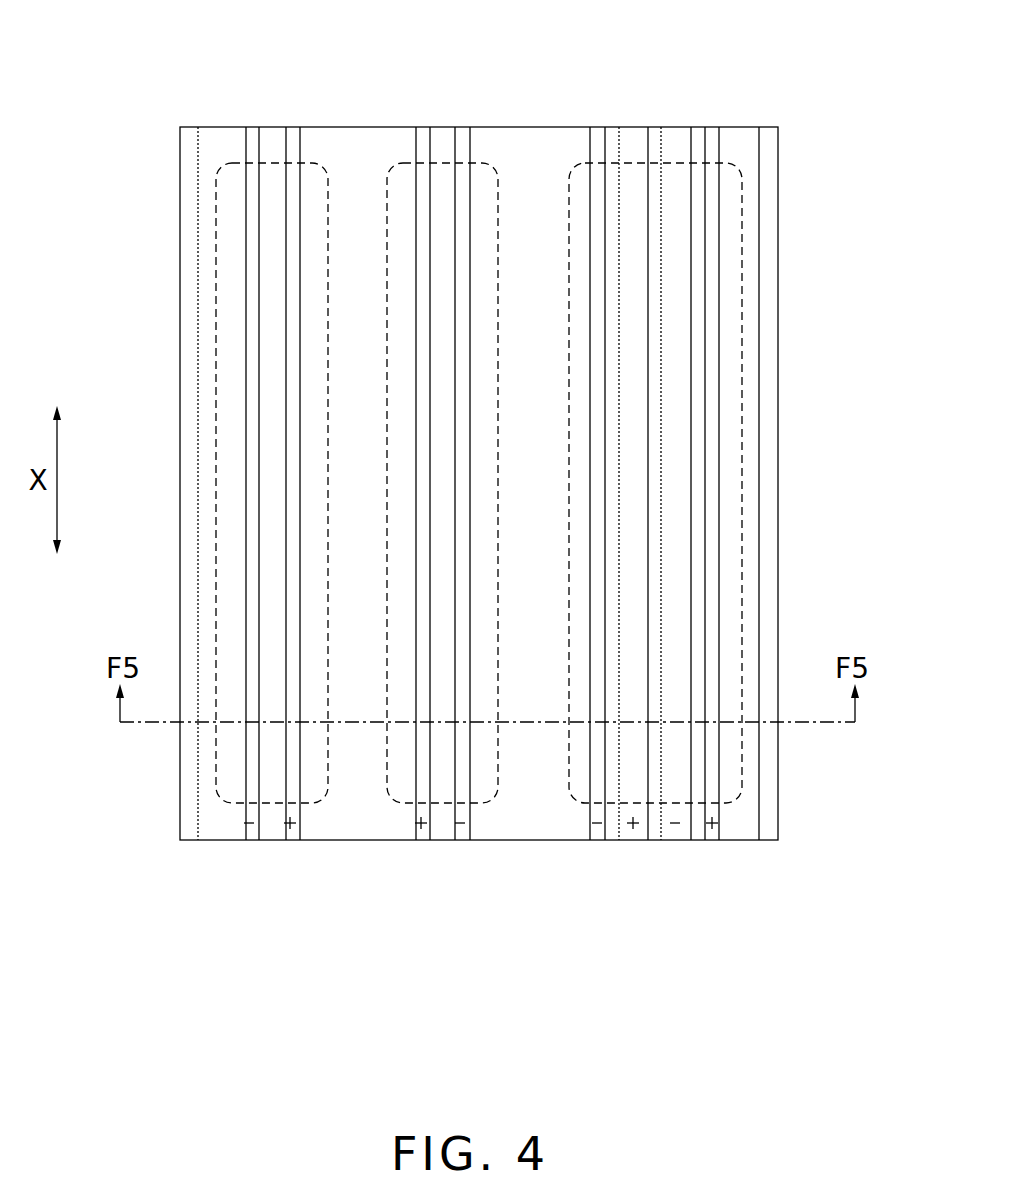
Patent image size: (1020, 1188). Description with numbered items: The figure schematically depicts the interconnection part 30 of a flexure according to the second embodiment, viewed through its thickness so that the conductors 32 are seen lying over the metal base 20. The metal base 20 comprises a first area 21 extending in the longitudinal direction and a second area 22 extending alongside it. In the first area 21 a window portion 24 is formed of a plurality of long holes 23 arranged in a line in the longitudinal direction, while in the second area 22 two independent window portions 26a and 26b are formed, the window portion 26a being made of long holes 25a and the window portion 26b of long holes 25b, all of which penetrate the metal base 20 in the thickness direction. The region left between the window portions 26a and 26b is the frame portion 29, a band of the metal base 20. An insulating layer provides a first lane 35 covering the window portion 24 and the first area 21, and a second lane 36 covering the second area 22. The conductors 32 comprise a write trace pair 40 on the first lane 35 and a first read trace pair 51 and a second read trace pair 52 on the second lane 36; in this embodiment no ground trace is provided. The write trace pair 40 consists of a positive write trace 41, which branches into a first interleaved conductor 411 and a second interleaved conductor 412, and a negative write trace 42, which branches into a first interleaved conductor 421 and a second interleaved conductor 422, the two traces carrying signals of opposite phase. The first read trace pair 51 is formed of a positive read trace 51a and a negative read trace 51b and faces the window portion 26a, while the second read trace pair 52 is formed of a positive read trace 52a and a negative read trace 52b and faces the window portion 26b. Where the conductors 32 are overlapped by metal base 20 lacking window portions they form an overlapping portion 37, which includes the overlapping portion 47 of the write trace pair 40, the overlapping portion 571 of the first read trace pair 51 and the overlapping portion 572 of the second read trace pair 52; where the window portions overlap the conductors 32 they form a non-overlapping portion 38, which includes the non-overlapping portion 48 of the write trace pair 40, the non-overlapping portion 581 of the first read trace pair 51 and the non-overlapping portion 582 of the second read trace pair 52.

The metal base 20 is at (774, 513).
The first area 21 is at (636, 245).
The second area 22 is at (270, 250).
The long hole 23 is at (742, 200).
The window portion 24 is at (656, 175).
The long hole 25a is at (498, 178).
The long hole 25b is at (328, 178).
The window portion 26a is at (443, 175).
The window portion 26b is at (292, 175).
The frame portion 29 is at (367, 260).
The interconnection part 30 is at (750, 589).
The conductors 32 is at (695, 1041).
The first lane 35 is at (678, 245).
The second lane 36 is at (307, 250).
The overlapping portion 37 is at (595, 136).
The non-overlapping portion 38 is at (632, 478).
The write trace pair 40 is at (570, 991).
The positive write trace 41 is at (530, 946).
The negative write trace 42 is at (668, 946).
The first interleaved conductor 411 is at (633, 840).
The second interleaved conductor 412 is at (720, 840).
The first interleaved conductor 421 is at (678, 812).
The second interleaved conductor 422 is at (600, 808).
The overlapping portion 47 is at (600, 150).
The non-overlapping portion 48 is at (637, 521).
The first read trace pair 51 is at (502, 991).
The positive read trace 51a is at (422, 840).
The negative read trace 51b is at (460, 840).
The second read trace pair 52 is at (330, 991).
The positive read trace 52a is at (290, 840).
The negative read trace 52b is at (249, 840).
The overlapping portion 571 is at (420, 147).
The overlapping portion 572 is at (250, 145).
The non-overlapping portion 581 is at (425, 490).
The non-overlapping portion 582 is at (255, 486).